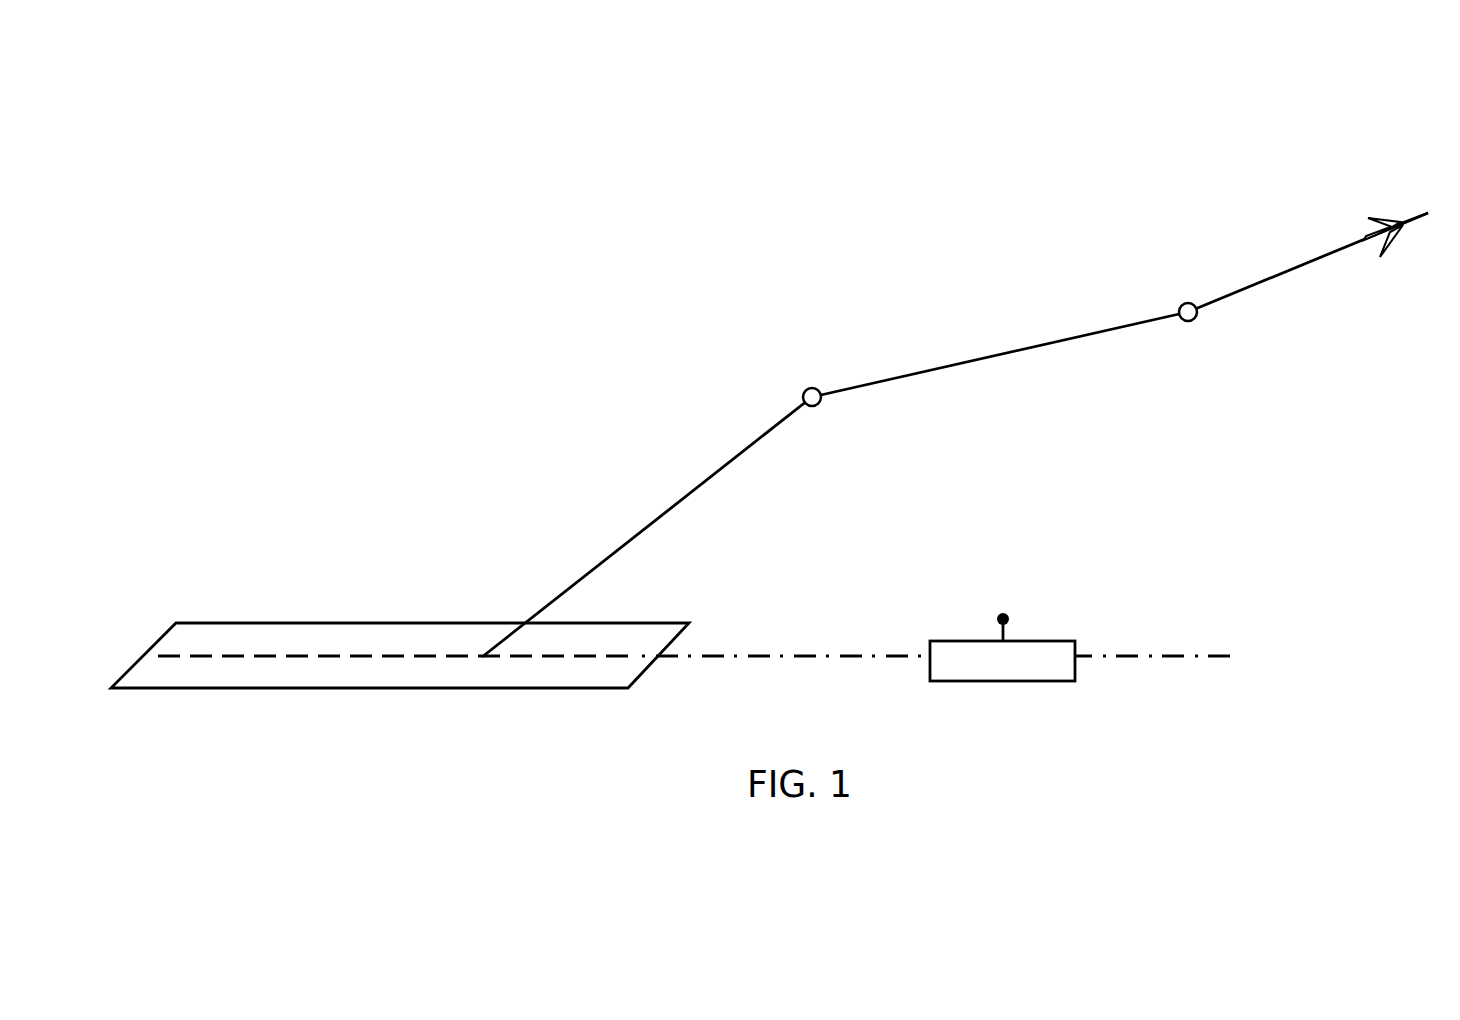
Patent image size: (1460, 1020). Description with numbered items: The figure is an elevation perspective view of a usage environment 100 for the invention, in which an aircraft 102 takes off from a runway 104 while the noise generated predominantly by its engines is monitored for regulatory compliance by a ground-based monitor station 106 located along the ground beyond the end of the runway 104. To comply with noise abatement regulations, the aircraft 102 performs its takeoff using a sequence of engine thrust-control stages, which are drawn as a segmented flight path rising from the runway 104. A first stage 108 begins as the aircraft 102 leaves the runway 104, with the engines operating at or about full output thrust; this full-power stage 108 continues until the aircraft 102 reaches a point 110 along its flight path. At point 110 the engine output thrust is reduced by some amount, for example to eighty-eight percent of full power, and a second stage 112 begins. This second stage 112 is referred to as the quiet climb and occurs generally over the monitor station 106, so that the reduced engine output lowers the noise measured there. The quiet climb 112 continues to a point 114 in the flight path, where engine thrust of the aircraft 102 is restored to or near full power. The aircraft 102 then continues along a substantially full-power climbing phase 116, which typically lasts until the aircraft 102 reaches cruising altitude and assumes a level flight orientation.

The usage environment 100 is at (712, 128).
The aircraft 102 is at (1387, 222).
The runway 104 is at (282, 633).
The ground-based monitor station 106 is at (963, 641).
The first stage 108 is at (695, 485).
The point 110 is at (810, 406).
The second stage 112 is at (1023, 347).
The point 114 is at (1186, 321).
The full-power climbing phase 116 is at (1273, 273).